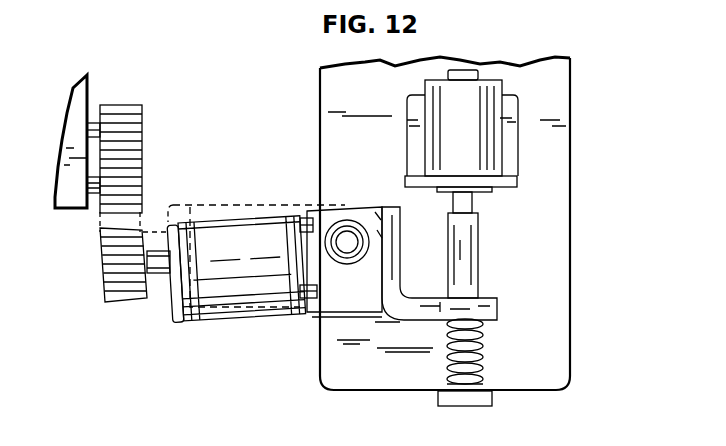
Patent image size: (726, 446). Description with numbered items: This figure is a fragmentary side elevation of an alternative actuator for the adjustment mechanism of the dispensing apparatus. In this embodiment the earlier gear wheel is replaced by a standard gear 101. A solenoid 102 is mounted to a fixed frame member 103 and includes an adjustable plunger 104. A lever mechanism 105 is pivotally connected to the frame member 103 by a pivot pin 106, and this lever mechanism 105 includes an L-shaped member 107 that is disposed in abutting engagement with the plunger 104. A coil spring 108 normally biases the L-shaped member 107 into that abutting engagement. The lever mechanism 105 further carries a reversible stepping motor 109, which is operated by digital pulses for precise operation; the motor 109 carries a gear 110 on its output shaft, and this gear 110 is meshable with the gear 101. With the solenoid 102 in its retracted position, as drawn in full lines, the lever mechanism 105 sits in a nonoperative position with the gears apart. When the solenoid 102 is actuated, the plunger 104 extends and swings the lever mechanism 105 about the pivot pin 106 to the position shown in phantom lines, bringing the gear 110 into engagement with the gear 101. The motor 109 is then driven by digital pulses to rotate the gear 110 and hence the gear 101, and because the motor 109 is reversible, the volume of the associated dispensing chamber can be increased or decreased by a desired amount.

The gear 101 is at (151, 103).
The solenoid 102 is at (481, 92).
The fixed frame member 103 is at (551, 140).
The adjustable plunger 104 is at (469, 260).
The lever mechanism 105 is at (333, 317).
The pivot pin 106 is at (349, 238).
The L-shaped member 107 is at (415, 316).
The coil spring 108 is at (550, 367).
The reversible stepping motor 109 is at (252, 320).
The gear 110 is at (132, 302).